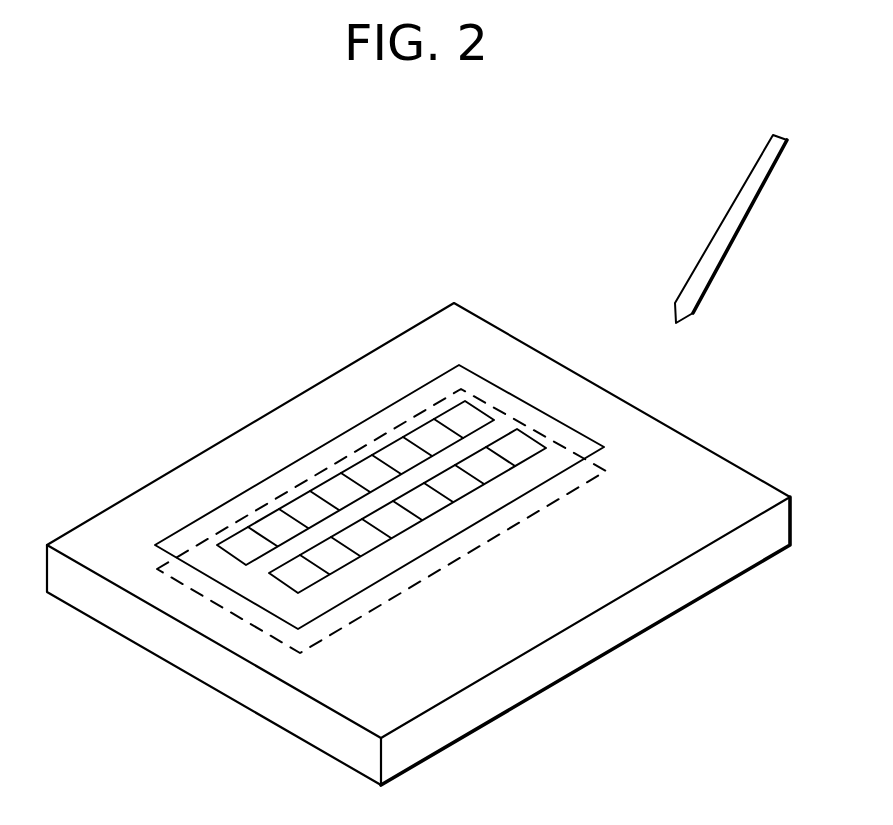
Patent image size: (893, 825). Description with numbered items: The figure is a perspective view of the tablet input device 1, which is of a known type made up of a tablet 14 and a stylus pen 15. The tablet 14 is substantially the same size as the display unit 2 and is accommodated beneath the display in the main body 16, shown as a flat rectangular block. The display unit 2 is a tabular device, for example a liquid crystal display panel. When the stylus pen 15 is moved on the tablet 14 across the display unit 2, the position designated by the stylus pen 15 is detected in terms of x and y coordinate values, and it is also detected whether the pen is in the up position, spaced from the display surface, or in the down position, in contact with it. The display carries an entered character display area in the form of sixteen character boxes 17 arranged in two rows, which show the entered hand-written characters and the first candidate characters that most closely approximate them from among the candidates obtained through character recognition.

The tablet input device 1 is at (682, 150).
The display unit 2 is at (275, 472).
The tablet 14 is at (488, 402).
The stylus pen 15 is at (728, 210).
The main body 16 is at (602, 658).
The character boxes 17 is at (343, 570).